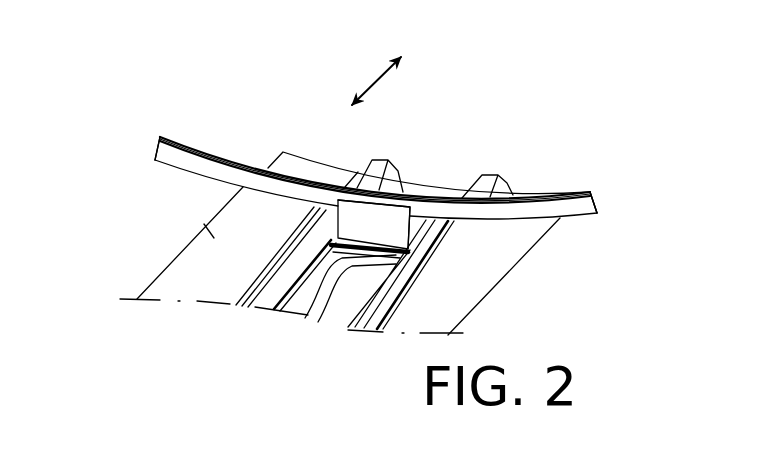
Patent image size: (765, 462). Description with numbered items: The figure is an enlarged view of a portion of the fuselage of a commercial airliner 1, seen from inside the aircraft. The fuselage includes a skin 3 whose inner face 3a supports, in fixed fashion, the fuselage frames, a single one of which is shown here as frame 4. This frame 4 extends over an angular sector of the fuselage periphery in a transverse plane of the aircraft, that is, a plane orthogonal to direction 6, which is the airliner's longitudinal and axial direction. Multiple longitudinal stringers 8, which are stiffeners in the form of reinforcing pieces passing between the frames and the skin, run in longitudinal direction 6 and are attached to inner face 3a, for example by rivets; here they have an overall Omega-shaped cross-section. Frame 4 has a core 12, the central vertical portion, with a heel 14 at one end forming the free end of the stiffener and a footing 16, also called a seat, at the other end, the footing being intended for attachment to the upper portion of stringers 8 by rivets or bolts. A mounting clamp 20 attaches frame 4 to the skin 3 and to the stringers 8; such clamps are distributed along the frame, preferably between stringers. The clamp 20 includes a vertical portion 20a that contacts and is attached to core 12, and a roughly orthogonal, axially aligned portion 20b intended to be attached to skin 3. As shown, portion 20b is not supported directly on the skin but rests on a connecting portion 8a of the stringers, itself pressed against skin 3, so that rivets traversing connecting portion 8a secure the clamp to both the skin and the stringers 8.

The commercial airliner 1 is at (458, 146).
The skin 3 is at (178, 271).
The inner face 3a is at (209, 230).
The fuselage frame 4 is at (158, 136).
The longitudinal direction 6 is at (373, 83).
The longitudinal stringer 8 is at (243, 303).
The connecting portion of stringers 8a is at (348, 258).
The core 12 is at (598, 197).
The heel 14 is at (186, 146).
The footing 16 is at (599, 212).
The mounting clamp 20 is at (377, 217).
The vertical portion 20a is at (410, 227).
The orthogonal portion 20b is at (390, 250).